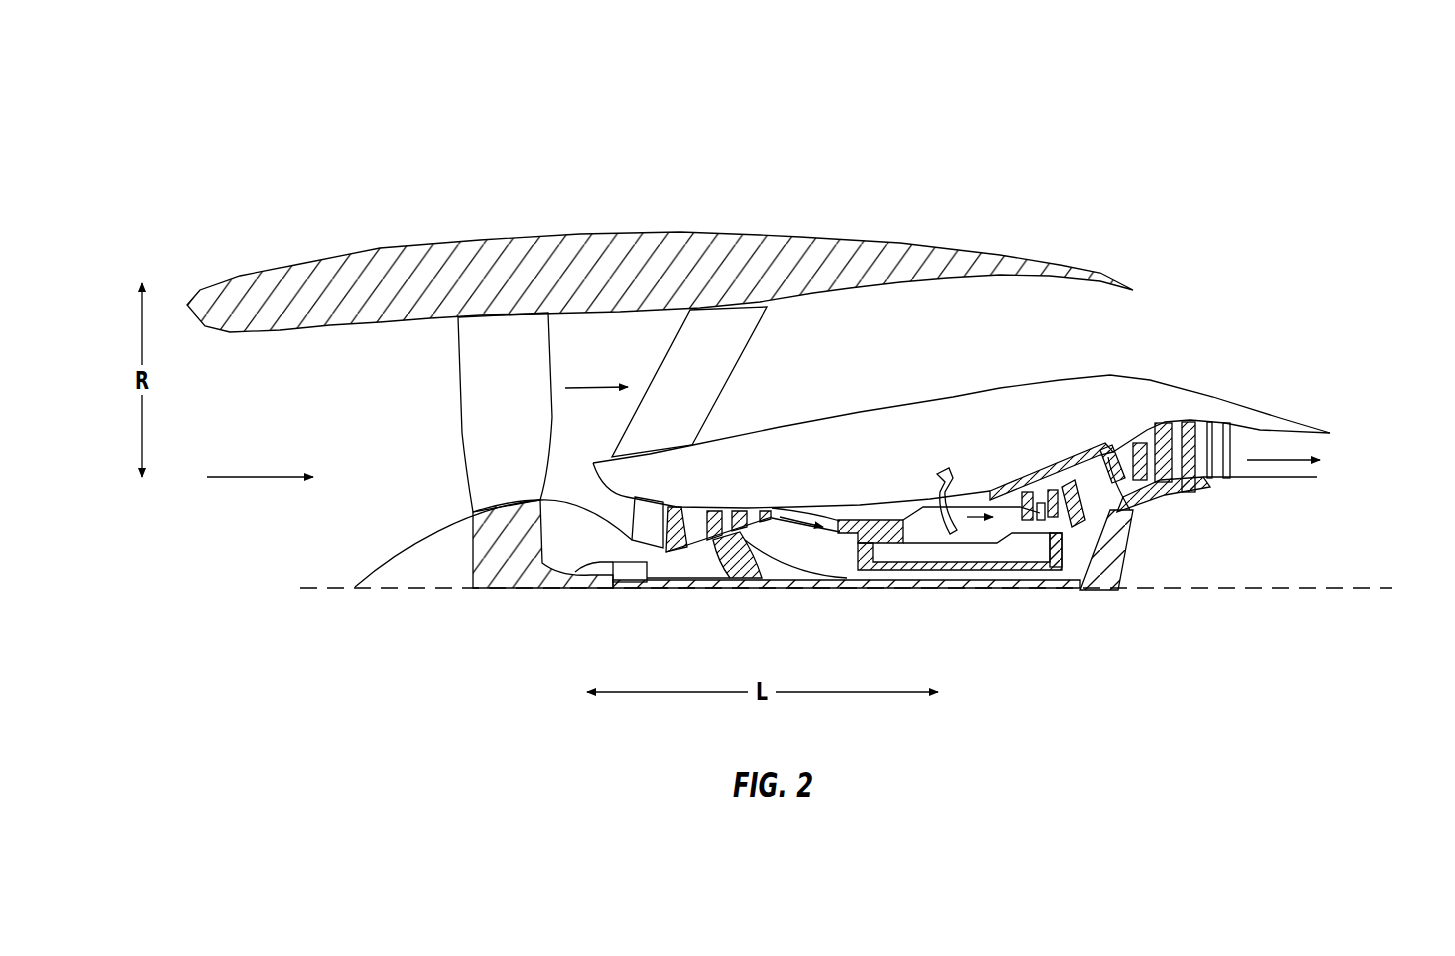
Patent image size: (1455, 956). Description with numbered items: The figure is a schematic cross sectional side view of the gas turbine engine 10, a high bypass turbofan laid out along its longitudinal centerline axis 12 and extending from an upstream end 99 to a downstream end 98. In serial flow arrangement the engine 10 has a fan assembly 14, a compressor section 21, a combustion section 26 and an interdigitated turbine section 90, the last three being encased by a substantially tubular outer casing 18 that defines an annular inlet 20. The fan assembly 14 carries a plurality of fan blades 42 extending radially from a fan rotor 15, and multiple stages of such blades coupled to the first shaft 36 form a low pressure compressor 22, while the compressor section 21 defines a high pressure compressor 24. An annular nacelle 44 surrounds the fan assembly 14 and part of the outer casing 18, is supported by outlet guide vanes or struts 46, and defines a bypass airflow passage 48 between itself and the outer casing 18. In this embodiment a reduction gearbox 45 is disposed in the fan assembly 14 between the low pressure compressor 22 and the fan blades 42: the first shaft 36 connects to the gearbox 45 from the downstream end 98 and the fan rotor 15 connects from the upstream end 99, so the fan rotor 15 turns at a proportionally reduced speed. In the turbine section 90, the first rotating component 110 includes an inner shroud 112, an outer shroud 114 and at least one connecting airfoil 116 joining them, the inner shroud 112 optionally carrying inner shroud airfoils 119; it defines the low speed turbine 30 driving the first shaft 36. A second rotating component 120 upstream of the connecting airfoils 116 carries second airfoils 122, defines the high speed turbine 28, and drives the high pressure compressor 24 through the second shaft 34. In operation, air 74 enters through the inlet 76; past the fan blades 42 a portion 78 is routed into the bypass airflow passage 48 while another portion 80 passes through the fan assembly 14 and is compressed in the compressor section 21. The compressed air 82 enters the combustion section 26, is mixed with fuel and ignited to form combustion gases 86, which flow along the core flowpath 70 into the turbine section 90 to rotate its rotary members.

The gas turbine engine 10 is at (947, 120).
The longitudinal centerline axis 12 is at (1337, 585).
The fan assembly 14 is at (443, 448).
The fan rotor 15 is at (482, 545).
The outer casing 18 is at (903, 417).
The annular inlet 20 is at (582, 473).
The compressor section 21 is at (793, 477).
The low pressure compressor 22 is at (677, 500).
The high pressure compressor 24 is at (843, 517).
The combustion section 26 is at (972, 490).
The high speed turbine 28 is at (1062, 533).
The low speed turbine 30 is at (1225, 440).
The second shaft 34 is at (858, 555).
The first shaft 36 is at (703, 580).
The fan blades 42 is at (467, 367).
The nacelle 44 is at (413, 252).
The reduction gearbox 45 is at (630, 568).
The outlet guide vanes or struts 46 is at (697, 394).
The bypass airflow passage 48 is at (836, 379).
The core flowpath 70 is at (650, 520).
The air 74 is at (270, 478).
The inlet 76 is at (295, 410).
The bypass air 78 is at (582, 388).
The core air 80 is at (573, 490).
The compressed air 82 is at (792, 503).
The combustion gases 86 is at (975, 496).
The turbine section 90 is at (1113, 410).
The downstream end 98 is at (1448, 494).
The upstream end 99 is at (111, 492).
The first rotating component 110 is at (1113, 550).
The inner shroud 112 is at (1187, 487).
The outer shroud 114 is at (1063, 480).
The connecting airfoil 116 is at (1118, 452).
The inner shroud airfoils 119 is at (1185, 427).
The second rotating component 120 is at (990, 553).
The second airfoils 122 is at (1035, 490).